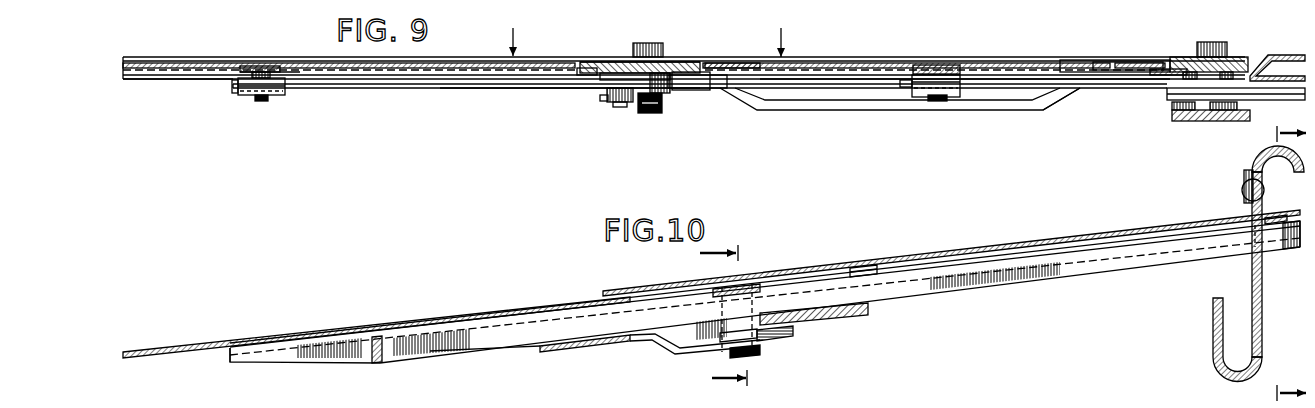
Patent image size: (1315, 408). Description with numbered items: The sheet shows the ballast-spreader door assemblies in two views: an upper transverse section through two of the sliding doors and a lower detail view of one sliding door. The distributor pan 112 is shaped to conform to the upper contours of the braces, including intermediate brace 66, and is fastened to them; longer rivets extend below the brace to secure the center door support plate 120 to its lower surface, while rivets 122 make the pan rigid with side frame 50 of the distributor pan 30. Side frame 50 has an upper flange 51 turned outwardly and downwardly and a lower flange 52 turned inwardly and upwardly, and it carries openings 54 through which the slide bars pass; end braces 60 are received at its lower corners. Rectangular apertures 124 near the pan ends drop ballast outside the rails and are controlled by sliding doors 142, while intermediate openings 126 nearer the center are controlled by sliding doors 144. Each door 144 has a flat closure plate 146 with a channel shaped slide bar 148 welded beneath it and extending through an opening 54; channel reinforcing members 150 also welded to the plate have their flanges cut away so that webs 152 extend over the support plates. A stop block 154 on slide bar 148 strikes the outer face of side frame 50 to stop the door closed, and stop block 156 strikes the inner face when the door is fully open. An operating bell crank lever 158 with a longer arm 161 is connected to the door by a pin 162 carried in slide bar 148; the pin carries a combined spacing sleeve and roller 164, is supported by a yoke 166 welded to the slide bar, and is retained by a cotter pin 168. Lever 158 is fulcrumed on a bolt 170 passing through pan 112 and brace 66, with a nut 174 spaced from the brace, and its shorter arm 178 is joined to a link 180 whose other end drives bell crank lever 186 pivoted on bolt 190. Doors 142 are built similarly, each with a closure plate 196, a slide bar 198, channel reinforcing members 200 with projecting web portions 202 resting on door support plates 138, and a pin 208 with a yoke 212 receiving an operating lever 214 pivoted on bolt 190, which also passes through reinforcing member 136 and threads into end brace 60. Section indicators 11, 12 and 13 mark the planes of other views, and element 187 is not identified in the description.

In FIG. 9, the distributor pan 30 is at (905, 52).
In FIG. 10, the distributor pan 30 is at (1013, 235).
In FIG. 9, the distributor pan 112 is at (745, 55).
In FIG. 10, the distributor pan 112 is at (940, 250).
In FIG. 9, the intermediate openings 126 is at (489, 62).
In FIG. 10, the intermediate openings 126 is at (301, 333).
In FIG. 9, the rectangular apertures 124 is at (858, 60).
In FIG. 9, the flat closure plate 146 is at (199, 62).
In FIG. 10, the flat closure plate 146 is at (372, 336).
In FIG. 9, the channel shaped reinforcing members 150 is at (220, 80).
In FIG. 10, the channel shaped reinforcing members 150 is at (376, 364).
In FIG. 9, the sliding doors 144 is at (161, 81).
In FIG. 10, the sliding doors 144 is at (228, 358).
In FIG. 9, the longer arm 161 is at (398, 87).
In FIG. 10, the longer arm 161 is at (845, 324).
In FIG. 9, the operating bell crank lever 158 is at (534, 90).
In FIG. 9, the channel shaped slide bar 148 is at (290, 78).
In FIG. 10, the channel shaped slide bar 148 is at (1017, 281).
In FIG. 9, the yoke 166 is at (277, 97).
In FIG. 10, the yoke 166 is at (663, 343).
In FIG. 9, the pin 162 is at (260, 102).
In FIG. 10, the pin 162 is at (760, 283).
In FIG. 9, the bolt 170 is at (653, 42).
In FIG. 9, the webs 152 is at (590, 63).
In FIG. 9, the intermediate brace 66 is at (683, 59).
In FIG. 9, the shorter arm 178 is at (607, 98).
In FIG. 9, the nut 174 is at (658, 108).
In FIG. 9, the washer 187 is at (620, 110).
In FIG. 9, the center door support plate 120 is at (710, 80).
In FIG. 9, the projecting web portions 202 is at (707, 68).
In FIG. 9, the section line 13 is at (649, 34).
In FIG. 9, the link 180 is at (791, 110).
In FIG. 9, the channel reinforcing members 200 is at (790, 72).
In FIG. 9, the slide bar 198 is at (960, 70).
In FIG. 9, the yoke 212 is at (956, 100).
In FIG. 9, the pin 208 is at (937, 102).
In FIG. 9, the operating lever 214 is at (1044, 110).
In FIG. 9, the sliding doors 142 is at (1035, 60).
In FIG. 9, the closure plate 196 is at (1095, 62).
In FIG. 9, the bolt 190 is at (1196, 43).
In FIG. 9, the door support plates 138 is at (1172, 72).
In FIG. 9, the reinforcing members 136 is at (1255, 57).
In FIG. 9, the bell crank lever 186 is at (1284, 97).
In FIG. 9, the end braces 60 is at (1180, 116).
In FIG. 9, the section line 12 is at (1278, 134).
In FIG. 10, the section line 12 is at (1275, 391).
In FIG. 10, the combined spacing sleeve and roller 164 is at (676, 362).
In FIG. 10, the cotter pin 168 is at (765, 351).
In FIG. 10, the stop block 156 is at (865, 266).
In FIG. 10, the section line 11 is at (737, 315).
In FIG. 10, the side frame 50 is at (1264, 280).
In FIG. 10, the upper flange 51 is at (1258, 150).
In FIG. 10, the lower flange 52 is at (1214, 320).
In FIG. 10, the rivets 122 is at (1242, 197).
In FIG. 10, the stop block 154 is at (1294, 205).
In FIG. 10, the openings 54 is at (1253, 252).